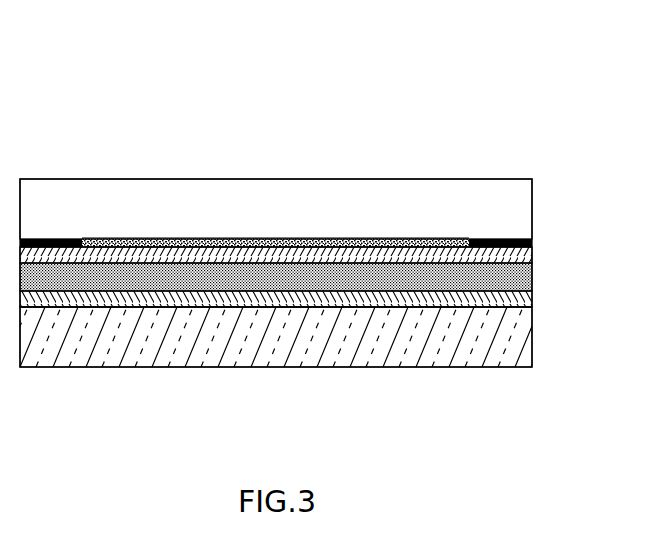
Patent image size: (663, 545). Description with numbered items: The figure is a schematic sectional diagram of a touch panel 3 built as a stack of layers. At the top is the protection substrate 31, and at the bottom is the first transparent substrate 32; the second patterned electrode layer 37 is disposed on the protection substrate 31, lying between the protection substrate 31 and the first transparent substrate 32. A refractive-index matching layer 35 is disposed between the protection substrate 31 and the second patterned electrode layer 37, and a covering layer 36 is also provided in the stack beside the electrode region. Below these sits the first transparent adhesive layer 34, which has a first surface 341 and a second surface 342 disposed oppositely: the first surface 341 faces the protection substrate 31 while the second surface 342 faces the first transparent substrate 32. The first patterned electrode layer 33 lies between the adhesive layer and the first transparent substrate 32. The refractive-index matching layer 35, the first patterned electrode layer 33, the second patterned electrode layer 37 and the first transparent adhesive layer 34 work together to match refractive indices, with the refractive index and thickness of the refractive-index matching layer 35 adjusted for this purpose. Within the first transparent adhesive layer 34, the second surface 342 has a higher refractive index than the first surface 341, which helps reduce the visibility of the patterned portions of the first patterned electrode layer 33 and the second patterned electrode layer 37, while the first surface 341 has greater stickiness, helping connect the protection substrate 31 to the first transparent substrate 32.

The touch panel 3 is at (156, 64).
The protection substrate 31 is at (263, 179).
The first transparent substrate 32 is at (528, 355).
The first patterned electrode layer 33 is at (522, 307).
The first transparent adhesive layer 34 is at (593, 248).
The first surface 341 is at (530, 261).
The second surface 342 is at (530, 292).
The refractive-index matching layer 35 is at (322, 238).
The covering layer 36 is at (478, 240).
The second patterned electrode layer 37 is at (523, 249).